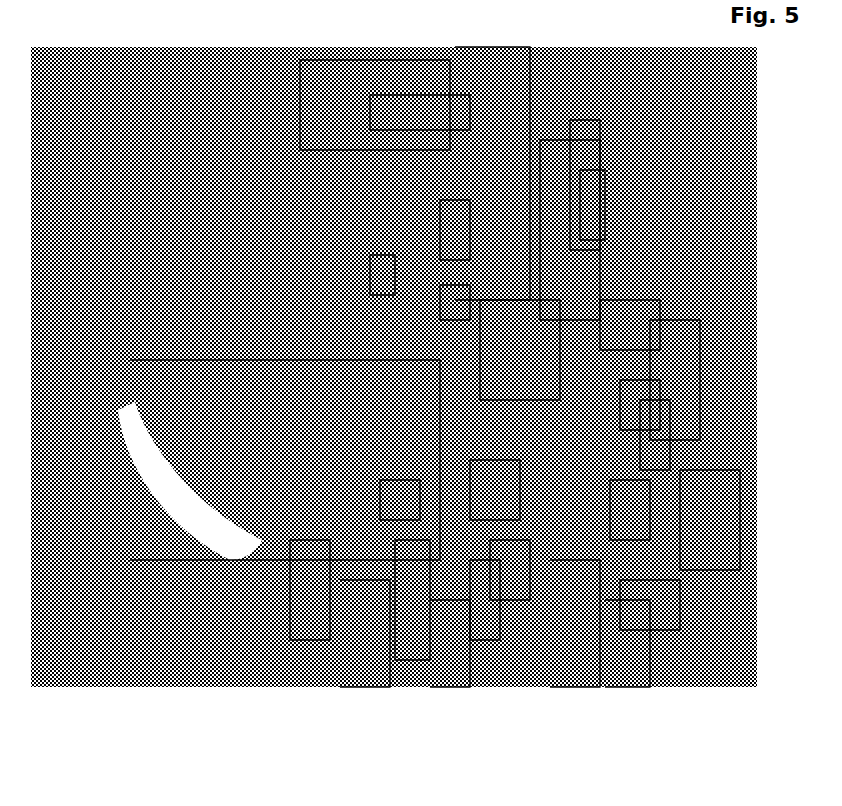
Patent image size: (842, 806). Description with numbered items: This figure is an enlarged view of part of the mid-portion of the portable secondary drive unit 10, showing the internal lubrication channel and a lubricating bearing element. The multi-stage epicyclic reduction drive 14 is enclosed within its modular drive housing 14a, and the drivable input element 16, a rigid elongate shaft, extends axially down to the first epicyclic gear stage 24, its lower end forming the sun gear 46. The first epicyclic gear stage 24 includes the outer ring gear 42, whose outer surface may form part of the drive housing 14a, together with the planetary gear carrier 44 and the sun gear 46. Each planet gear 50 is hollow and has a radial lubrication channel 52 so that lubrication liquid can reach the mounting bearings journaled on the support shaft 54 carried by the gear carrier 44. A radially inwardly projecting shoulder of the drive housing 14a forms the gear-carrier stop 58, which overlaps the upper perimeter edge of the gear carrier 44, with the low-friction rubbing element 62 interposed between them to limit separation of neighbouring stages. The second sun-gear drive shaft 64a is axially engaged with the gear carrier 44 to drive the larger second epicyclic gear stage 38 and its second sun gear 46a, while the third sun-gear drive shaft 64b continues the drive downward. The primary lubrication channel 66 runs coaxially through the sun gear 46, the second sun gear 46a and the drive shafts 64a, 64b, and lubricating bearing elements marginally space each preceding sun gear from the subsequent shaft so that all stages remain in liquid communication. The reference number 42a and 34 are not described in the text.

The portable secondary drive unit 10 is at (697, 522).
The multi-stage epicyclic reduction drive 14 is at (330, 470).
The drive housing 14a is at (675, 345).
The drivable input element 16 is at (490, 75).
The first epicyclic gear stage 24 is at (580, 165).
The ring 34 is at (372, 82).
The second epicyclic gear stage 38 is at (640, 405).
The outer ring gear 42 is at (555, 235).
The arm portion 42a is at (650, 428).
The planetary gear carrier 44 is at (590, 205).
The sun gear 46 is at (450, 230).
The second sun gear 46a is at (505, 555).
The planet gear 50 is at (380, 270).
The radial lubrication channel 52 is at (408, 555).
The support shaft 54 is at (365, 655).
The gear-carrier stop 58 is at (620, 320).
The low-friction rubbing element 62 is at (415, 118).
The second sun-gear drive shaft 64a is at (490, 360).
The third sun-gear drive shaft 64b is at (445, 670).
The primary lubrication channel 66 is at (480, 492).